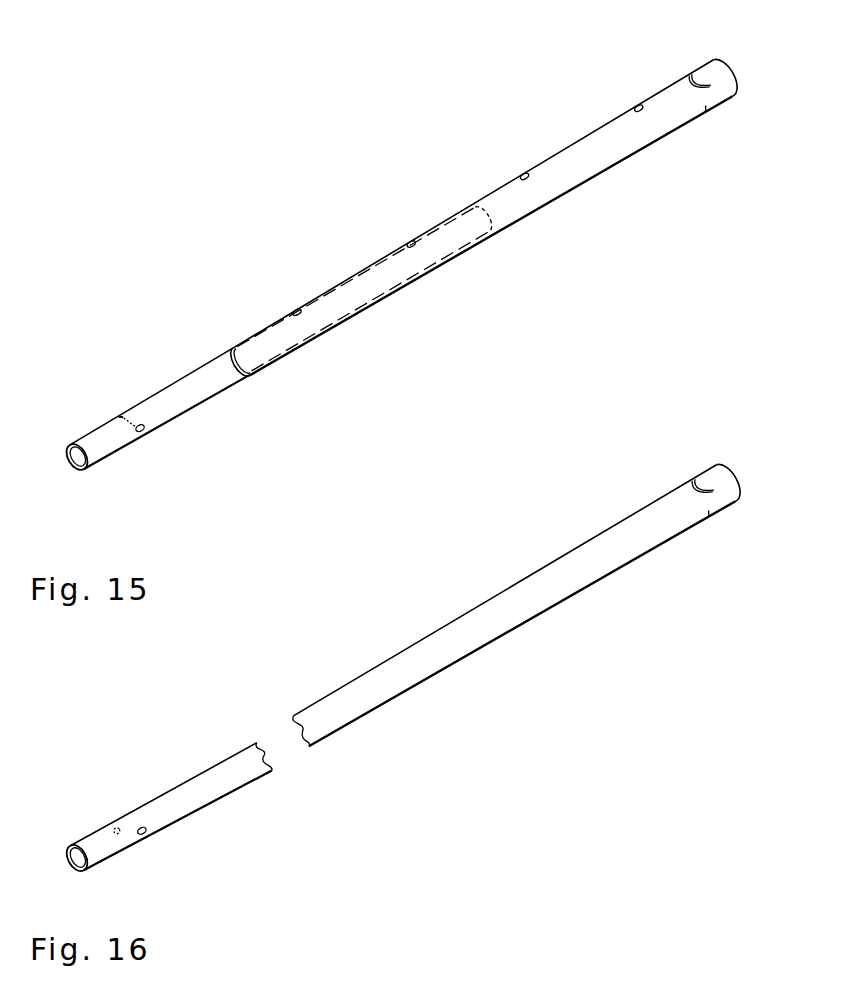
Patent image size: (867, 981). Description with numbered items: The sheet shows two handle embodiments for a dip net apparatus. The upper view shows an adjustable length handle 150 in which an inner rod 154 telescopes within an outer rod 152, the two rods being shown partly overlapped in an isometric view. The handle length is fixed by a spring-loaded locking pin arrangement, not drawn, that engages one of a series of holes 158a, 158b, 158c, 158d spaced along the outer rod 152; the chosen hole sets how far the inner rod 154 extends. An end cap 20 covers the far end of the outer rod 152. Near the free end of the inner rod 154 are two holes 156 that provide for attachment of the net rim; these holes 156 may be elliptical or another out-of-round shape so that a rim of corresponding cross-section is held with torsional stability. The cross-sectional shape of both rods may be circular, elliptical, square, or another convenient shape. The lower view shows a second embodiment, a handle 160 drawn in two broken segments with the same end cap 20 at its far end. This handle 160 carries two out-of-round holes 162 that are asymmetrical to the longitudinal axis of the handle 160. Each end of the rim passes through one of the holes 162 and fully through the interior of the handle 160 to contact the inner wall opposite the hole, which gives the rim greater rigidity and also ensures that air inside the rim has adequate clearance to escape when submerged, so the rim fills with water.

In FIG. 15, the adjustable length handle 150 is at (347, 118).
In FIG. 15, the outer rod 152 is at (537, 208).
In FIG. 15, the inner rod 154 is at (197, 405).
In FIG. 15, the holes 156 is at (121, 410).
In FIG. 15, the hole 158a is at (297, 308).
In FIG. 15, the hole 158b is at (412, 243).
In FIG. 15, the hole 158c is at (525, 175).
In FIG. 15, the hole 158d is at (641, 108).
In FIG. 15, the end cap 20 is at (730, 105).
In FIG. 16, the end cap 20 is at (725, 510).
In FIG. 16, the handle 160 is at (540, 612).
In FIG. 16, the out-of-round holes 162 is at (136, 820).